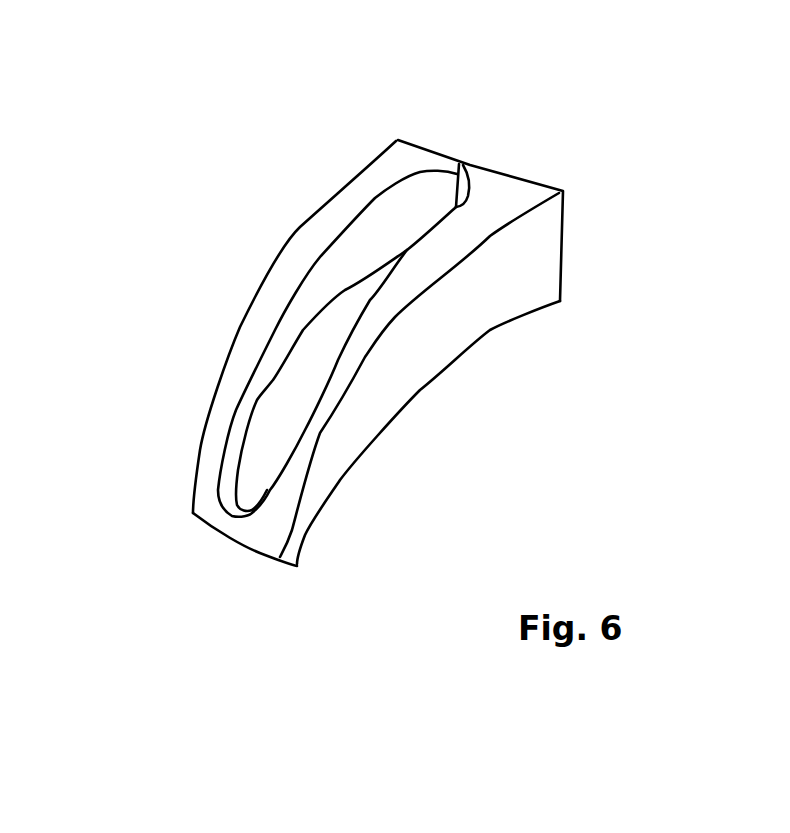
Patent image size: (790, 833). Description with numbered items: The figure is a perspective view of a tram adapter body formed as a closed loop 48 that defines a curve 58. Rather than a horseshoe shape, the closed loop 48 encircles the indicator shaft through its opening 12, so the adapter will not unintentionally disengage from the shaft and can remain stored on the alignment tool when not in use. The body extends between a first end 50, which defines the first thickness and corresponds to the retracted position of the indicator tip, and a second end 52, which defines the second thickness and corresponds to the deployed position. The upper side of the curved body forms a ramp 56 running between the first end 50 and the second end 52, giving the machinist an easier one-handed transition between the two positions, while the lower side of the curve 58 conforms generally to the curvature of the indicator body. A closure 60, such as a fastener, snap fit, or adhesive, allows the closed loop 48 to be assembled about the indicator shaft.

The first end 50 is at (518, 175).
The ramp 56 is at (300, 228).
The curve 58 is at (340, 478).
The second end 52 is at (242, 548).
The closure 60 is at (471, 165).
The closed loop 48 is at (257, 292).
The opening 12 is at (267, 414).